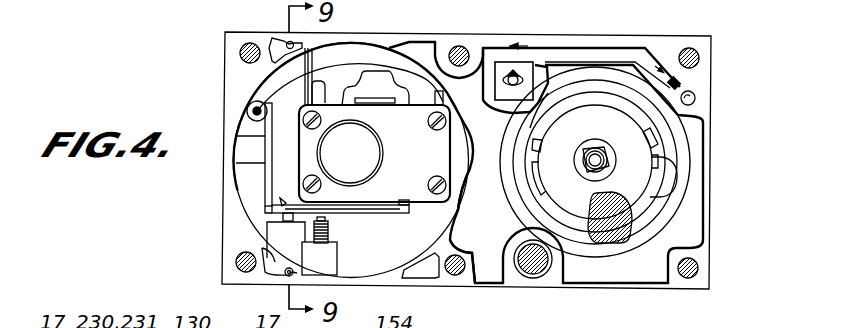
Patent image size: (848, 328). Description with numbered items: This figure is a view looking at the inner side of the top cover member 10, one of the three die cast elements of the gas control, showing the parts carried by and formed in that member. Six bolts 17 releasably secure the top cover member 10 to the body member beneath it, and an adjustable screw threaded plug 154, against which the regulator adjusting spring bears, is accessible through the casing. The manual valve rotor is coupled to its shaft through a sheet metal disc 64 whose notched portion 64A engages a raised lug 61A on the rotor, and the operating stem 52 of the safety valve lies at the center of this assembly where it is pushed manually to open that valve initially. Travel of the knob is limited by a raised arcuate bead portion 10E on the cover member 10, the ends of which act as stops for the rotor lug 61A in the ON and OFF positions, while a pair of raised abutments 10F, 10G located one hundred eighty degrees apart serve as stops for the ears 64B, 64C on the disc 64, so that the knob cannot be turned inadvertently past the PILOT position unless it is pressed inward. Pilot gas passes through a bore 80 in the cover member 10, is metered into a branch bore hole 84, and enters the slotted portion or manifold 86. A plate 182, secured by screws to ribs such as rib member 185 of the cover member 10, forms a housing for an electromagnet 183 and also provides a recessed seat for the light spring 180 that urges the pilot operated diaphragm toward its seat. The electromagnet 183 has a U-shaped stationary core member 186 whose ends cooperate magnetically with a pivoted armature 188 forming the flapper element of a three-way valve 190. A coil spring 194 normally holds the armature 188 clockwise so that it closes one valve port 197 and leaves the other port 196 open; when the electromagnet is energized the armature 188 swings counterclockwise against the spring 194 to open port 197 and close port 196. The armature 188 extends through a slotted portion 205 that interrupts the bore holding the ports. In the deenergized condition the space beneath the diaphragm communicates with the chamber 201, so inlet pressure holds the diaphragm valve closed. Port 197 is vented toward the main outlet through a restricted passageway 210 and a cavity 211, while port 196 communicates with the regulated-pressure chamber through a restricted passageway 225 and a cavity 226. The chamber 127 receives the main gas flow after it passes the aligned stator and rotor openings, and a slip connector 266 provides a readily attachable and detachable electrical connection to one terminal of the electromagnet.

The top cover member 10 is at (703, 181).
The raised arcuate bead portion 10E is at (537, 172).
The raised abutment 10F is at (652, 206).
The raised abutment 10G is at (537, 156).
The bolts 17 is at (698, 268).
The operating stem 52 is at (588, 154).
The raised lug 61A is at (610, 230).
The sheet metal disc 64 is at (595, 162).
The notched portion 64A is at (619, 193).
The ear 64B is at (533, 162).
The ear 64C is at (658, 168).
The bore 80 is at (695, 99).
The branch bore hole 84 is at (680, 83).
The slotted portion or manifold 86 is at (600, 47).
The chamber 127 is at (480, 243).
The adjustable screw threaded plug 154 is at (540, 271).
The light spring 180 is at (350, 153).
The plate 182 is at (374, 153).
The electromagnet 183 is at (343, 92).
The rib member 185 is at (435, 96).
The U-shaped stationary core member 186 is at (376, 86).
The pivoted armature 188 is at (365, 213).
The three-way valve 190 is at (262, 211).
The coil spring 194 is at (330, 232).
The valve port 196 is at (283, 221).
The valve port 197 is at (282, 200).
The chamber 201 is at (250, 194).
The slotted portion 205 is at (289, 240).
The restricted passageway 210 is at (303, 42).
The cavity 211 is at (281, 42).
The restricted passageway 225 is at (293, 273).
The cavity 226 is at (271, 278).
The slip connector 266 is at (518, 75).